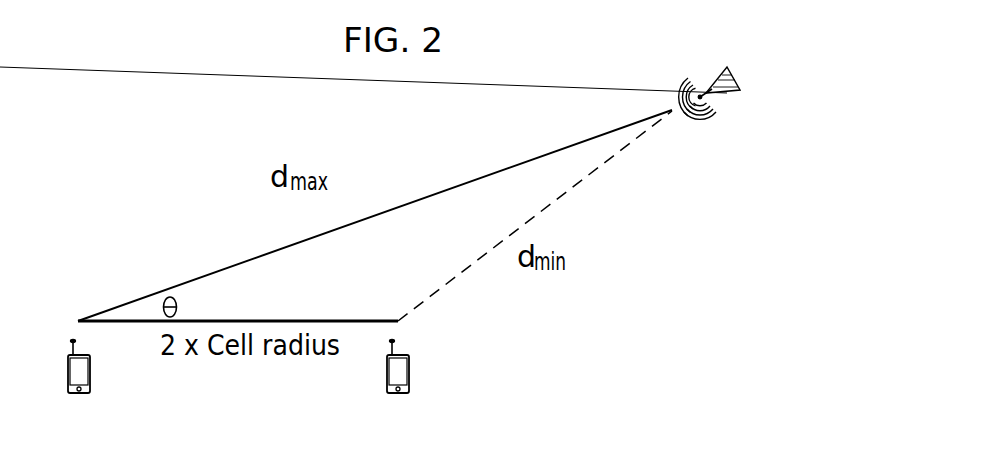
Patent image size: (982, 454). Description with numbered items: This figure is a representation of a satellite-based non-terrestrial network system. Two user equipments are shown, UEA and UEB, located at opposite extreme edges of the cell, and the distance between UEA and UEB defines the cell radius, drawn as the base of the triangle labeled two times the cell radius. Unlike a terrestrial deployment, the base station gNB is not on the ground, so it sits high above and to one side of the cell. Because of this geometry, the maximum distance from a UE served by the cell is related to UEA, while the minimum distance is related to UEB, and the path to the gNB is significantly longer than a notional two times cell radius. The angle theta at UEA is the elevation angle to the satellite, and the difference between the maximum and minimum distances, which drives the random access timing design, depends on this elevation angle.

The user equipment A UEA is at (85, 393).
The user equipment B UEB is at (404, 393).
The base station gNB is at (405, 106).